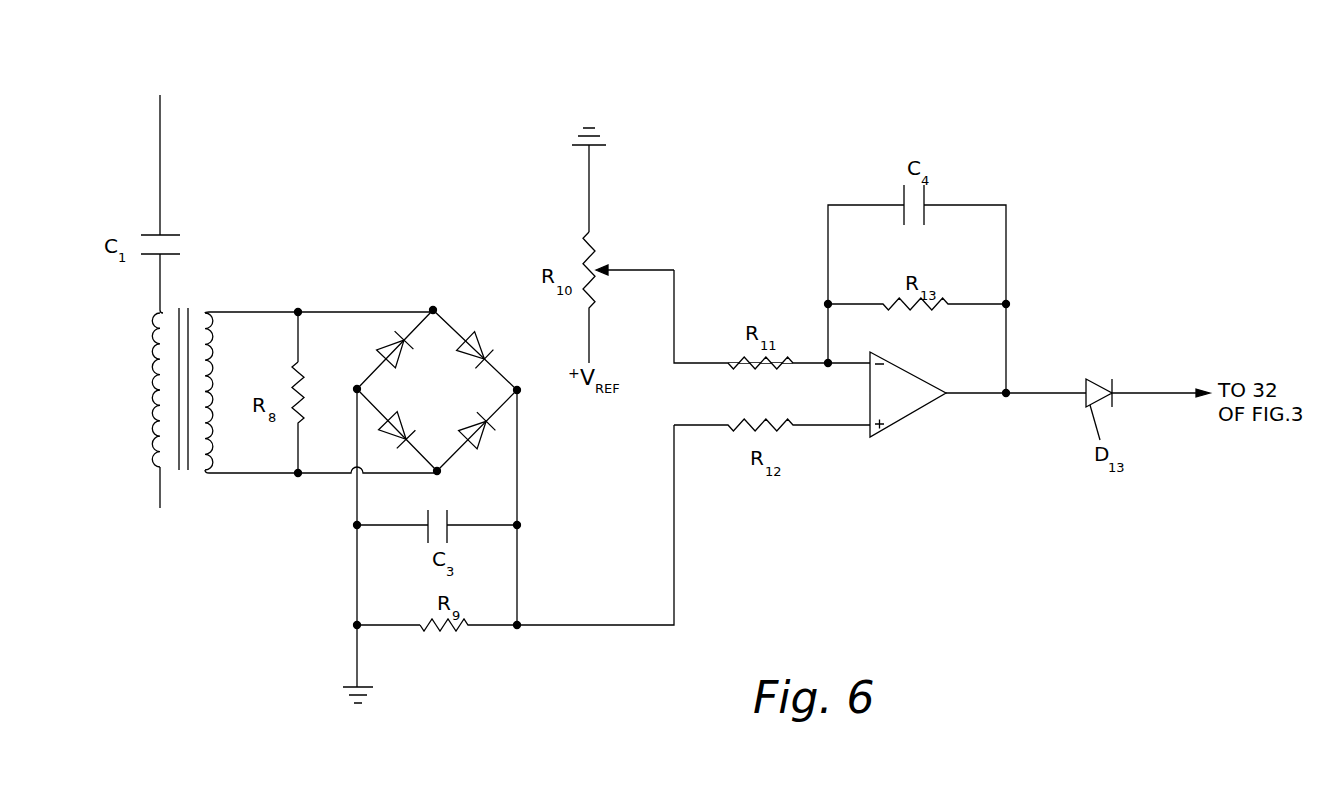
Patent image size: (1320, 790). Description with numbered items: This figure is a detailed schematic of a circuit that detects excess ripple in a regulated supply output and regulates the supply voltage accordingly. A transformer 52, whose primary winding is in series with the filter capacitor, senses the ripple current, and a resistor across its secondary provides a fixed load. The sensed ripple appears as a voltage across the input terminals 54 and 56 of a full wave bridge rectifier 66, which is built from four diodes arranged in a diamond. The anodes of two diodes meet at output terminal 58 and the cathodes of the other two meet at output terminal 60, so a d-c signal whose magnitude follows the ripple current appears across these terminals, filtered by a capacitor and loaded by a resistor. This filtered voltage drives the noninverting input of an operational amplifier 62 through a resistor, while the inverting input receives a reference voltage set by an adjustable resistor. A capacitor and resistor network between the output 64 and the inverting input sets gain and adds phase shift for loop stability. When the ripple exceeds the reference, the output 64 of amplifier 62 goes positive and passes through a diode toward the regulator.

The transformer 52 is at (185, 302).
The input terminal 54 is at (433, 310).
The input terminal 56 is at (437, 471).
The output terminal 58 is at (357, 389).
The output terminal 60 is at (517, 390).
The operational amplifier 62 is at (893, 428).
The output 64 is at (1006, 393).
The full wave bridge rectifier 66 is at (451, 387).